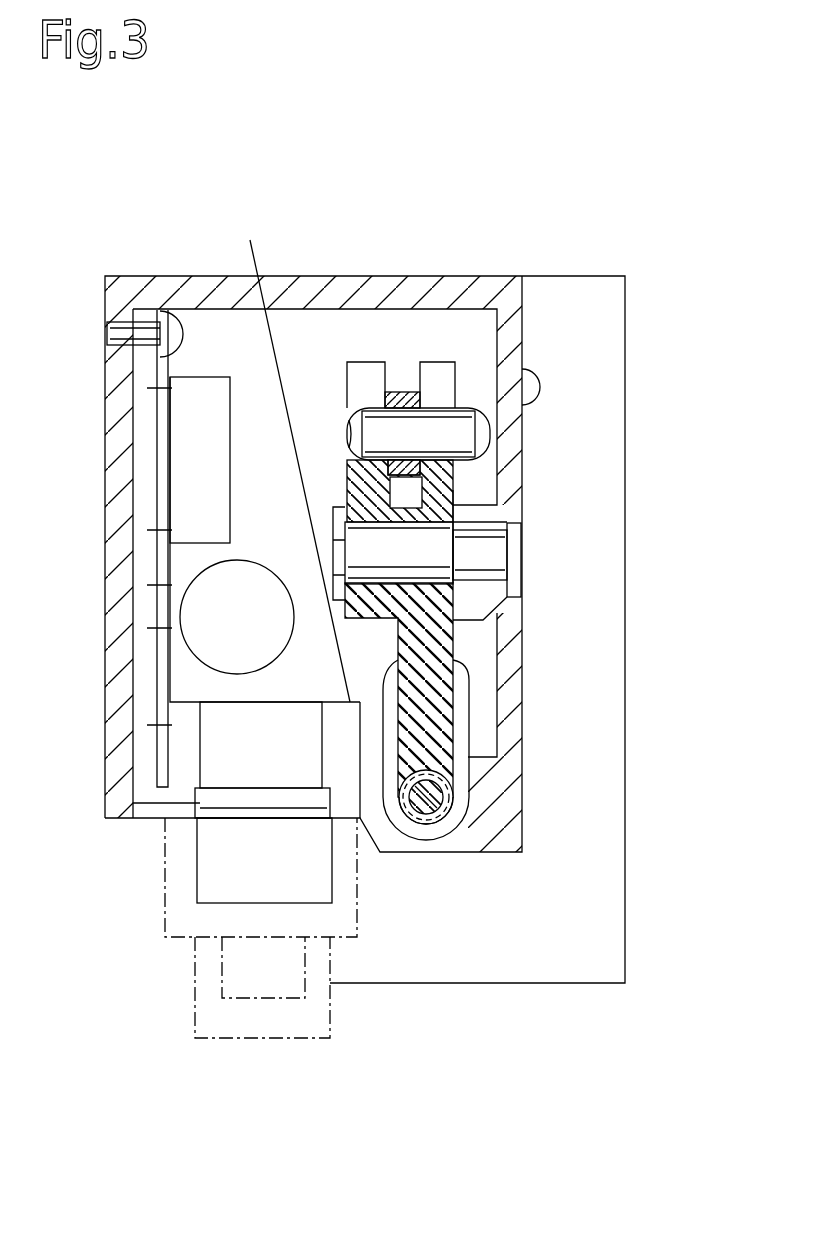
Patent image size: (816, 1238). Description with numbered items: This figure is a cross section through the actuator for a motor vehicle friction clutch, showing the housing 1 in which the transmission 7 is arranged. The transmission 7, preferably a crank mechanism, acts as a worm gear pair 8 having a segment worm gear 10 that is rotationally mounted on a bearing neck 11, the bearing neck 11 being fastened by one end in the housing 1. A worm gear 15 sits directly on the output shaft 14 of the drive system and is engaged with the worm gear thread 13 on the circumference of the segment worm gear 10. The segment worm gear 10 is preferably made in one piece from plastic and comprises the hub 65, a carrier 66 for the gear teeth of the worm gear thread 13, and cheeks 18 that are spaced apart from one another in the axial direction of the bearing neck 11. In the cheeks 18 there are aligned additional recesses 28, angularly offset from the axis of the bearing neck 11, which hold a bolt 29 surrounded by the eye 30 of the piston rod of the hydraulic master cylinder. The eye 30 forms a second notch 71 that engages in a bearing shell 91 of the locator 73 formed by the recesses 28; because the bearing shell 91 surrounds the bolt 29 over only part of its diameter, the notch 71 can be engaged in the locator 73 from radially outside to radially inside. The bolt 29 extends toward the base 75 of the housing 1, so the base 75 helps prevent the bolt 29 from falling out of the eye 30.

The housing 1 is at (445, 270).
The transmission 7 is at (382, 818).
The worm gear pair 8 is at (440, 778).
The segment worm gear 10 is at (440, 712).
The bearing neck 11 is at (515, 563).
The worm gear thread 13 is at (455, 797).
The output shaft 14 is at (435, 792).
The worm gear 15 is at (433, 813).
The cheeks 18 is at (440, 470).
The additional recesses 28 is at (427, 367).
The bolt 29 is at (488, 413).
The eye 30 is at (448, 407).
The hub 65 is at (456, 514).
The carrier 66 is at (445, 652).
The second notch 71 is at (233, 490).
The locator 73 is at (345, 415).
The base 75 is at (494, 364).
The bearing shell 91 is at (425, 480).